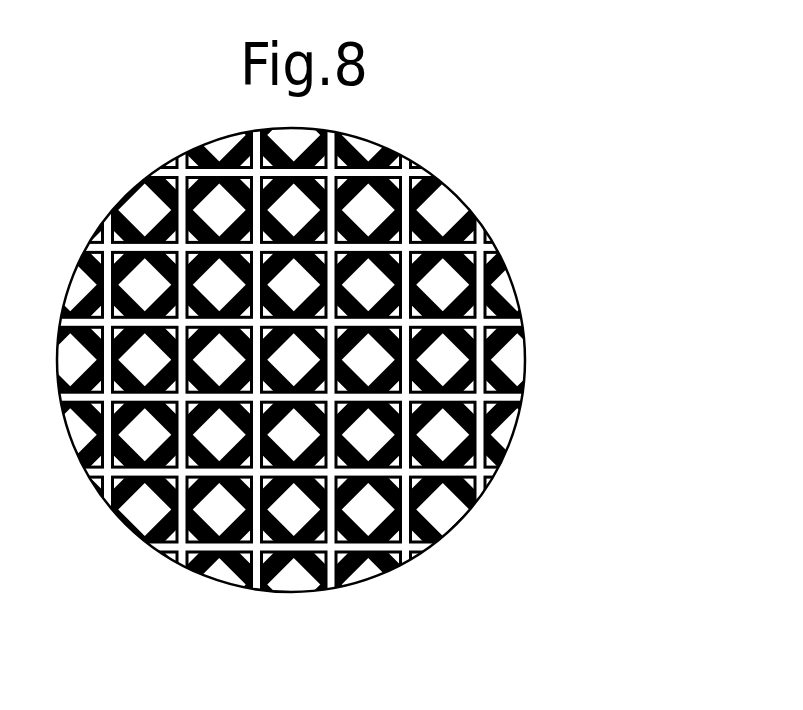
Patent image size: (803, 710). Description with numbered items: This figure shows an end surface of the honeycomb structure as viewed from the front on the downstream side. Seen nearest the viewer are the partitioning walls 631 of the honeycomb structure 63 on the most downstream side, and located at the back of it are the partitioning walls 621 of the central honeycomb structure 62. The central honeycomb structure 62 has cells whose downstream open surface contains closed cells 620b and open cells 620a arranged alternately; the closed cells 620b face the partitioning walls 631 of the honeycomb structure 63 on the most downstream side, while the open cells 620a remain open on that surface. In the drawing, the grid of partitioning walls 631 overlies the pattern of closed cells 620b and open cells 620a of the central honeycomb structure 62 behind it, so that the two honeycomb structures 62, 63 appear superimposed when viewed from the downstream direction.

The central honeycomb structure 62 is at (440, 172).
The partitioning walls 621 is at (425, 213).
The honeycomb structure on the most downstream side 63 is at (495, 258).
The partitioning walls 631 is at (473, 308).
The open cells 620a is at (440, 359).
The closed cells 620b is at (490, 462).